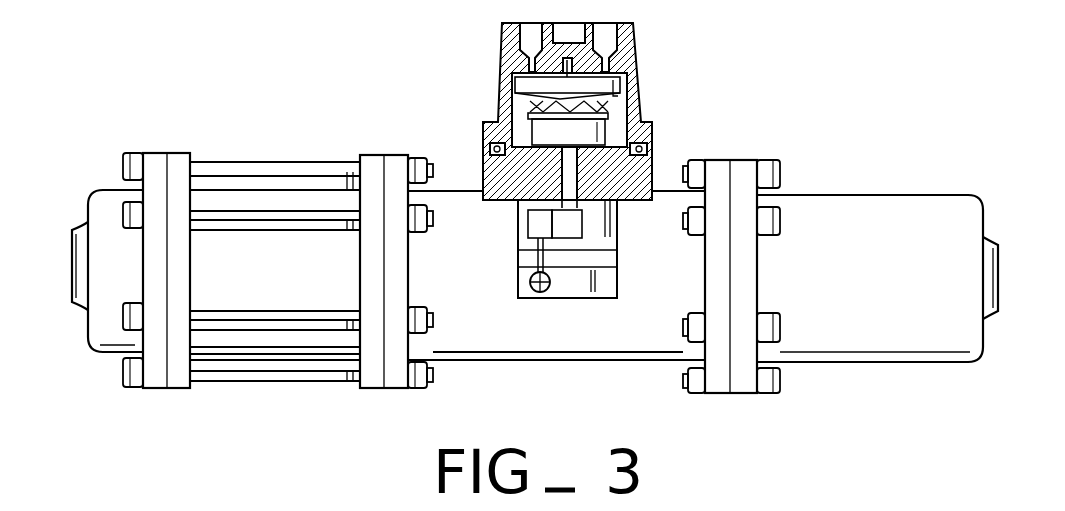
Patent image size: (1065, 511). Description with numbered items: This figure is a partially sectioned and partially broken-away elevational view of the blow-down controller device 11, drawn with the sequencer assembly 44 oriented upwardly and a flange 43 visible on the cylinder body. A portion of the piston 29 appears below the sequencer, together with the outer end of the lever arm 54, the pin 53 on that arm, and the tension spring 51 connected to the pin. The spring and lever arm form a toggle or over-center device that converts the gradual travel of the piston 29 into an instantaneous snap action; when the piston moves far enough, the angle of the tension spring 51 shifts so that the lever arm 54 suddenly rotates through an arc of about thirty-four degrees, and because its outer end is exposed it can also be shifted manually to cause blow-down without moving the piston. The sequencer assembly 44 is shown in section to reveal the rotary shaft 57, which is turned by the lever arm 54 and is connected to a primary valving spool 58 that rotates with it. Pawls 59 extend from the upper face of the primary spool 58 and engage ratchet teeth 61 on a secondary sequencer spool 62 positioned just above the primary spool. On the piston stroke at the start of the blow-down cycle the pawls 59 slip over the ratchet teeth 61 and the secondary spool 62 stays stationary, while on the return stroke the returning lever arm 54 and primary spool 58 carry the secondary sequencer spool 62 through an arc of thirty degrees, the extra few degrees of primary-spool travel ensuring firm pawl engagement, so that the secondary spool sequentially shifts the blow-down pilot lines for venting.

The blow-down controller device 11 is at (352, 137).
The piston 29 is at (608, 283).
The flange 43 is at (728, 157).
The sequencer assembly 44 is at (498, 72).
The tension spring 51 is at (546, 290).
The pin 53 is at (538, 257).
The lever arm 54 is at (538, 231).
The shaft 57 is at (572, 186).
The primary valving spool 58 is at (610, 135).
The pawls 59 is at (530, 107).
The ratchet teeth 61 is at (525, 95).
The secondary sequencer spool 62 is at (608, 84).